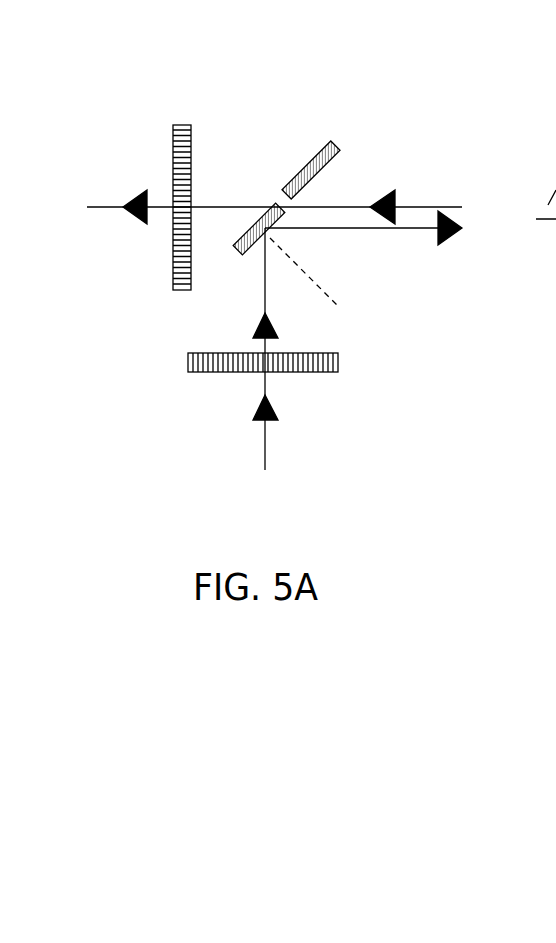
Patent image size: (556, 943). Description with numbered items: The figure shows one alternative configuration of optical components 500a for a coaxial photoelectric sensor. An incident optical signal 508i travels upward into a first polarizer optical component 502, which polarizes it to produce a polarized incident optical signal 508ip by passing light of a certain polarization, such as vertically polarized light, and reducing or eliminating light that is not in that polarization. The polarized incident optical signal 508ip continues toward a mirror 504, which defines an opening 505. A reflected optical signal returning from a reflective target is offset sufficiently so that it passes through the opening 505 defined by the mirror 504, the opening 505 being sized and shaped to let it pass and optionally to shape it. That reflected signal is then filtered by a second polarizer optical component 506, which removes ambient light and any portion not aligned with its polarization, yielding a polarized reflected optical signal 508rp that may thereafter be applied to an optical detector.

The optical components 500a is at (335, 82).
The first polarizer optical component 502 is at (341, 360).
The mirror 504 is at (343, 149).
The opening 505 is at (262, 198).
The second polarizer optical component 506 is at (172, 127).
The incident optical signal 508i is at (268, 440).
The polarized incident optical signal 508ip is at (403, 230).
The polarized reflected optical signal 508rp is at (92, 205).